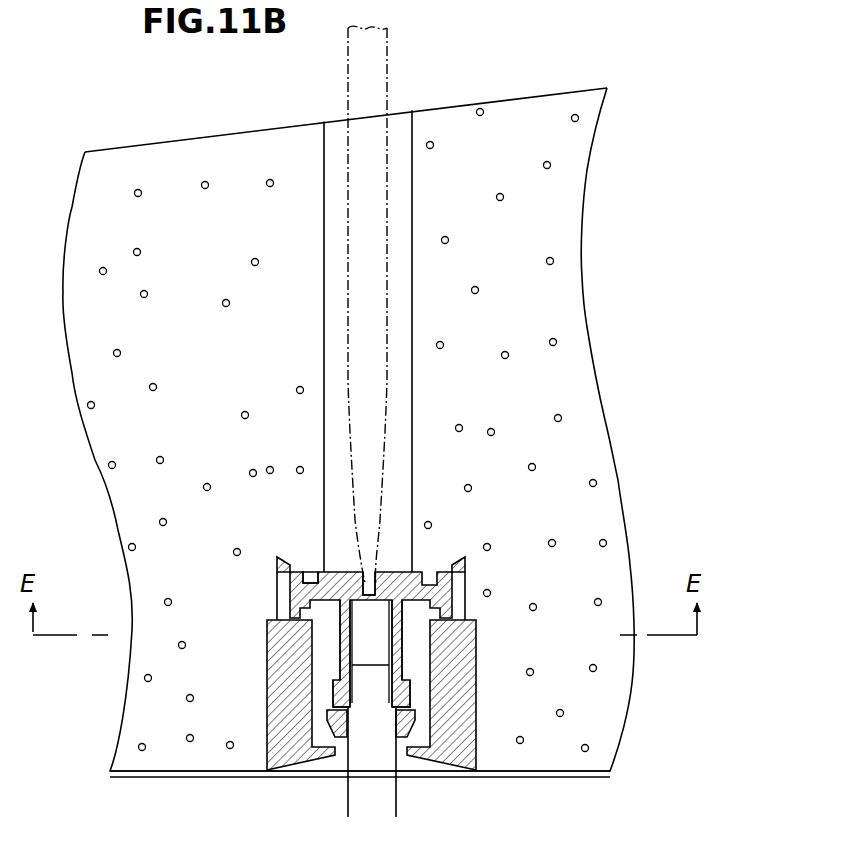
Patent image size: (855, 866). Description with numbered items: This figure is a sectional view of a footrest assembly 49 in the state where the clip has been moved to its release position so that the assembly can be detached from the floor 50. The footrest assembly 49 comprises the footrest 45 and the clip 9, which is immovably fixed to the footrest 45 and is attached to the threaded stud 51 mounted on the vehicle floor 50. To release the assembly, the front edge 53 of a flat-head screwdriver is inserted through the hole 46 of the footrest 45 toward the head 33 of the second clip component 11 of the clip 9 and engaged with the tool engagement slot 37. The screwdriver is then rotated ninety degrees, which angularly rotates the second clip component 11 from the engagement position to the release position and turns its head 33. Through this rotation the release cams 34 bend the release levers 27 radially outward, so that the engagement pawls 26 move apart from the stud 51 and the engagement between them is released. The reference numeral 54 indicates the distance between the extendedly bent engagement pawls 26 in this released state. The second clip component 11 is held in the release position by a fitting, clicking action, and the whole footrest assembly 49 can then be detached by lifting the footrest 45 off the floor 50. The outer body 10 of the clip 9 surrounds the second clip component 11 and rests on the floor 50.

The clip 9 is at (658, 405).
The outer body 10 is at (468, 597).
The second clip component 11 is at (425, 570).
The engagement pawl 26 is at (327, 722).
The release lever 27 is at (333, 686).
The head 33 is at (323, 572).
The release cam 34 is at (339, 640).
The tool engagement slot 37 is at (367, 571).
The footrest 45 is at (569, 174).
The hole 46 is at (327, 156).
The footrest assembly 49 is at (147, 127).
The floor 50 is at (254, 773).
The threaded stud 51 is at (381, 740).
The front edge 53 is at (387, 78).
The distance 54 is at (465, 801).